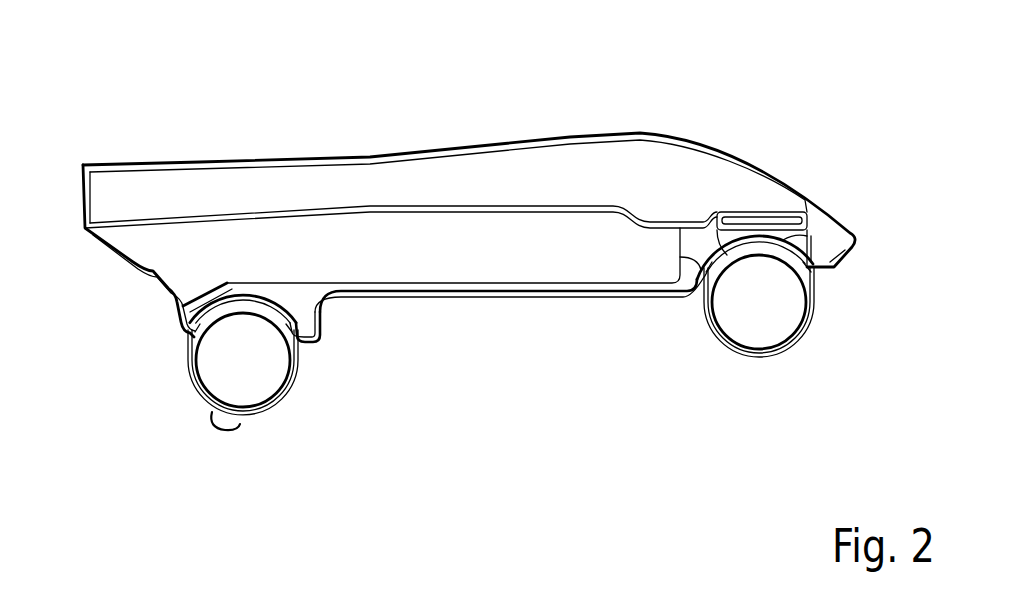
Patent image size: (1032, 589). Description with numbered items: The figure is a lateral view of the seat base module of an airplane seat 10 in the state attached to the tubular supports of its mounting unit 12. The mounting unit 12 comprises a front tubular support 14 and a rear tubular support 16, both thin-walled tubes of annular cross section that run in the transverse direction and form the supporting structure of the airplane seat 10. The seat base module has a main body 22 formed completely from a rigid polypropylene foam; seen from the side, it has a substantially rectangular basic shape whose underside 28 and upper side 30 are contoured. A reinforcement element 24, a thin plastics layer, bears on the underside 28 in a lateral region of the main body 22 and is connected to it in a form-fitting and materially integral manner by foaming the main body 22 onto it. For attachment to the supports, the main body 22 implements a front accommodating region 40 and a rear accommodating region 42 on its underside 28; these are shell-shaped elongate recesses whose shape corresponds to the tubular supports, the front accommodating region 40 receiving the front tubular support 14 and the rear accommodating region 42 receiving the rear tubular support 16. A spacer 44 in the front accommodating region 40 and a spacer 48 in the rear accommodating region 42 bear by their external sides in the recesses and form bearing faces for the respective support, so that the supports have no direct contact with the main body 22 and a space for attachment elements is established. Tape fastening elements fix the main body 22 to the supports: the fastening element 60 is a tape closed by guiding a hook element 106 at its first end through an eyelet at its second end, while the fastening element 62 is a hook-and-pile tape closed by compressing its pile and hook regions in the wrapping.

The airplane seat 10 is at (474, 116).
The mounting unit 12 is at (168, 349).
The front tubular support 14 is at (710, 338).
The rear tubular support 16 is at (190, 398).
The main body 22 is at (823, 250).
The reinforcement element 24 is at (487, 250).
The underside 28 is at (570, 218).
The upper side 30 is at (560, 139).
The front accommodating region 40 is at (777, 245).
The rear accommodating region 42 is at (217, 303).
The spacer 44 is at (851, 243).
The spacer 48 is at (257, 312).
The fastening element 60 is at (815, 334).
The fastening element 62 is at (273, 424).
The hook element 106 is at (218, 440).